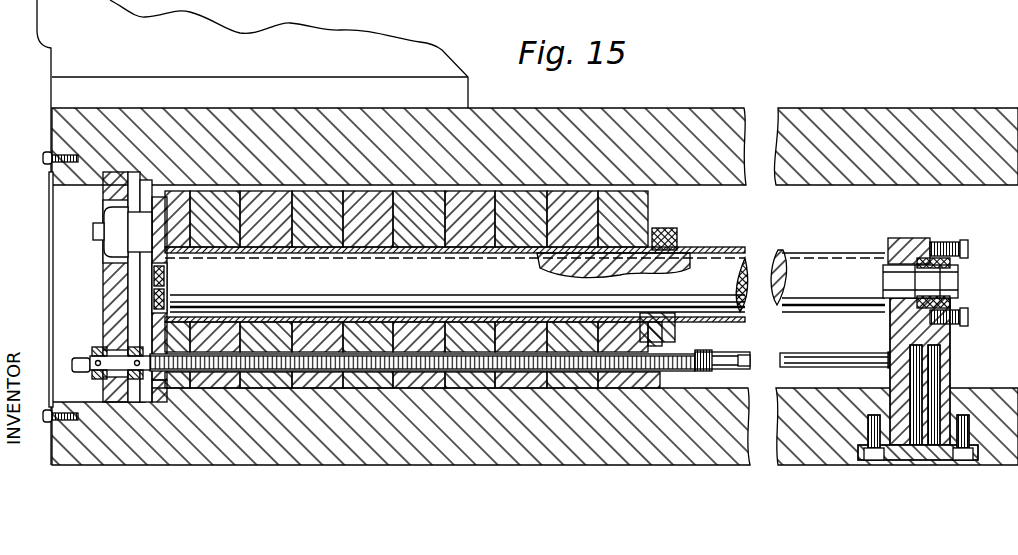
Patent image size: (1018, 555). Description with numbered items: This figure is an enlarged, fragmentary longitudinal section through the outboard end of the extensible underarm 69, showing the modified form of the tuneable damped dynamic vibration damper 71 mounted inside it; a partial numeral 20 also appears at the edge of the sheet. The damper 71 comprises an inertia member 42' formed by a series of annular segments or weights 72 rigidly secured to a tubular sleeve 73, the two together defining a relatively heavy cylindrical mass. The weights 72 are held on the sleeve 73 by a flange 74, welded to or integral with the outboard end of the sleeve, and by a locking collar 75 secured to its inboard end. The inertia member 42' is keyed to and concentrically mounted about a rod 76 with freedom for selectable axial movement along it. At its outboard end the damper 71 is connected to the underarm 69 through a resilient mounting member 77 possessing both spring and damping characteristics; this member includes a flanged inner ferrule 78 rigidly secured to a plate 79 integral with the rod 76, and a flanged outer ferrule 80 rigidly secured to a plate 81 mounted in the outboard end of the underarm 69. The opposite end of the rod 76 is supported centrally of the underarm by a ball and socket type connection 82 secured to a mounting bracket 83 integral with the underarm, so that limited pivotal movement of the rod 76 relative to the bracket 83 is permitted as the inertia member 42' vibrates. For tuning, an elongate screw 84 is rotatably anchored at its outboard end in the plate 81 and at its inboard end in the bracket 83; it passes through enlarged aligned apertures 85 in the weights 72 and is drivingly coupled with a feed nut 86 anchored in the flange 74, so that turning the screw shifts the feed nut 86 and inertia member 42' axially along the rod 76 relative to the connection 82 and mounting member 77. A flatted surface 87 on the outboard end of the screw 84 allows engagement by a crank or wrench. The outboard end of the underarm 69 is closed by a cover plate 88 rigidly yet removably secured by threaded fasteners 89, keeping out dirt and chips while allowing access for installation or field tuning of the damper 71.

The frame wall 20 is at (56, 58).
The underarm 69 is at (831, 112).
The damper 71 is at (788, 240).
The weights 72 is at (561, 198).
The tubular sleeve 73 is at (574, 250).
The flange 74 is at (170, 249).
The locking collar 75 is at (676, 238).
The rod 76 is at (813, 311).
The resilient mounting member 77 is at (140, 212).
The flanged inner ferrule 78 is at (143, 254).
The plate 79 is at (165, 216).
The flanged outer ferrule 80 is at (114, 216).
The plate 81 is at (107, 323).
The ball and socket type connection 82 is at (955, 278).
The mounting bracket 83 is at (931, 342).
The screw 84 is at (718, 371).
The apertures 85 is at (593, 364).
The feed nut 86 is at (178, 385).
The flatted surface 87 is at (74, 358).
The cover plate 88 is at (51, 228).
The threaded fasteners 89 is at (46, 154).
The inertia member 42' is at (422, 401).